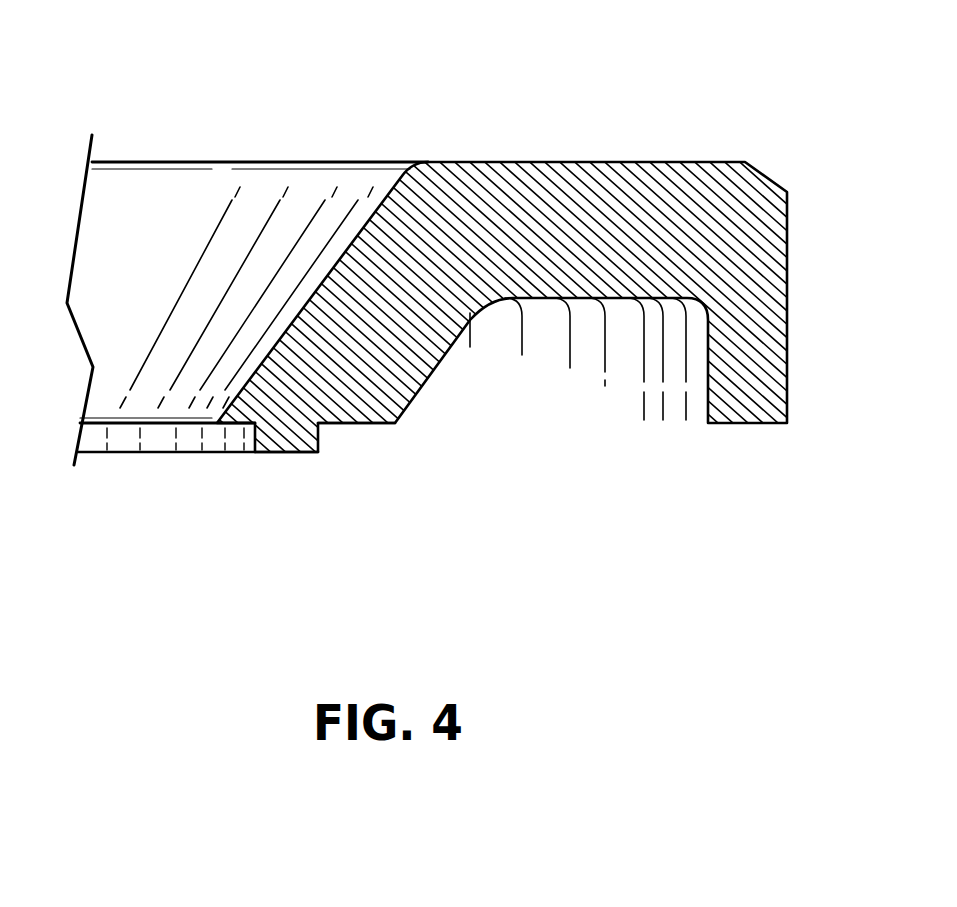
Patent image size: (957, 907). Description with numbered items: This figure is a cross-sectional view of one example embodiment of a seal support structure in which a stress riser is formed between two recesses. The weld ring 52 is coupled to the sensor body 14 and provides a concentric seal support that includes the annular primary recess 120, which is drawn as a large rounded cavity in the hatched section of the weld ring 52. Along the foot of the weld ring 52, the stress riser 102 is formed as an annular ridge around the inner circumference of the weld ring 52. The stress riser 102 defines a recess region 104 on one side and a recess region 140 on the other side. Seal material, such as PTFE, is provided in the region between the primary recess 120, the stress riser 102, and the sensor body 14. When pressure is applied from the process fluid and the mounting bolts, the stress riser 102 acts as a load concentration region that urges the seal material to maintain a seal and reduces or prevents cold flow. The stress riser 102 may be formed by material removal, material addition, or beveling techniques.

The sensor body 14 is at (300, 200).
The weld ring 52 is at (458, 218).
The stress riser 102 is at (297, 452).
The recess region 104 is at (232, 435).
The annular primary recess 120 is at (538, 358).
The recess region 140 is at (345, 427).